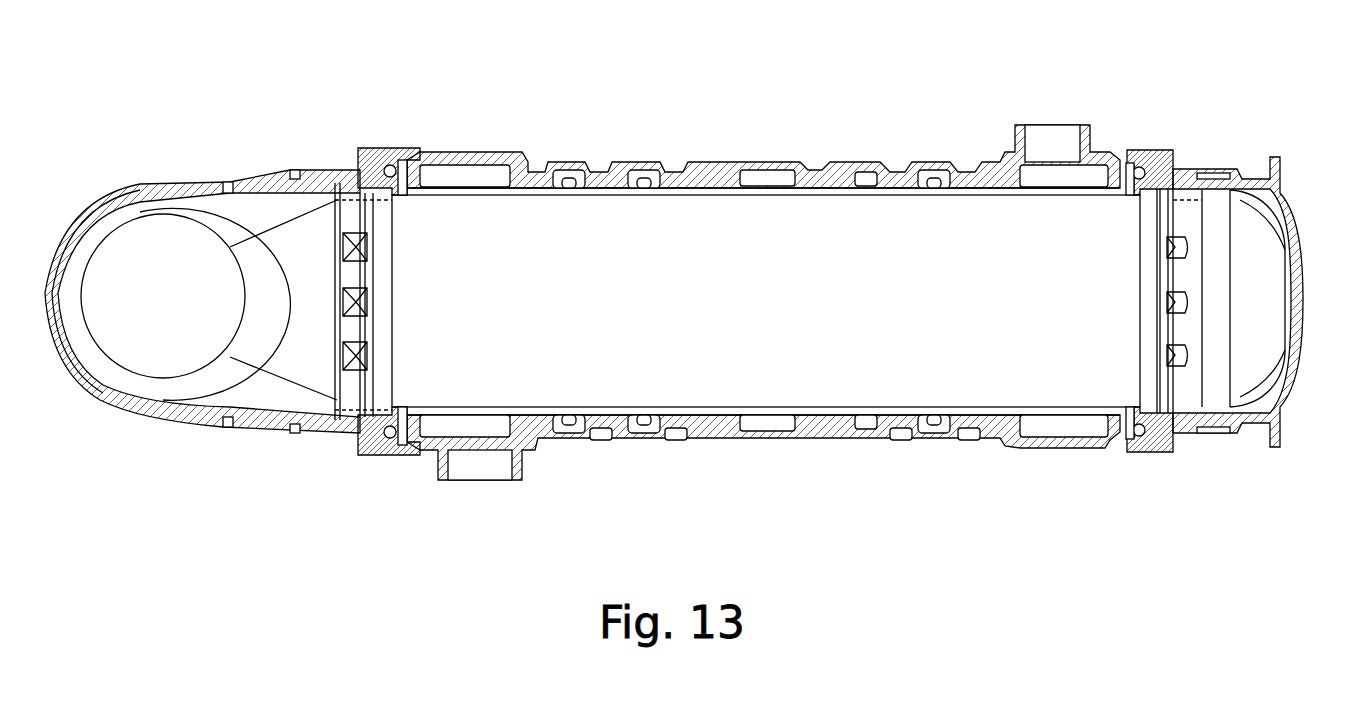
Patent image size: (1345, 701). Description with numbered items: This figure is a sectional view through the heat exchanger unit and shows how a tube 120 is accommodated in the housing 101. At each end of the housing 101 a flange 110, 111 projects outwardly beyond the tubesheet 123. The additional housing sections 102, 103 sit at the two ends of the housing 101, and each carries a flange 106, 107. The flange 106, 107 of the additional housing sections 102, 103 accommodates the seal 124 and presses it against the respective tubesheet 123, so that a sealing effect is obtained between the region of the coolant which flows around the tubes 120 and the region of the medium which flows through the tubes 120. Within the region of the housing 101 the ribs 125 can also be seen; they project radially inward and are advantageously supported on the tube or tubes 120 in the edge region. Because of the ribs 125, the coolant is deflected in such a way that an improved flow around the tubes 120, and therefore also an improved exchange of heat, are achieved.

The housing 101 is at (810, 178).
The additional housing section 102 is at (255, 162).
The additional housing section 103 is at (1295, 180).
The flange 106 is at (362, 150).
The flange 107 is at (1160, 155).
The flange 110 is at (409, 165).
The flange 111 is at (1115, 150).
The tube 120 is at (570, 248).
The tubesheet 123 is at (395, 450).
The seal 124 is at (390, 165).
The ribs 125 is at (660, 420).